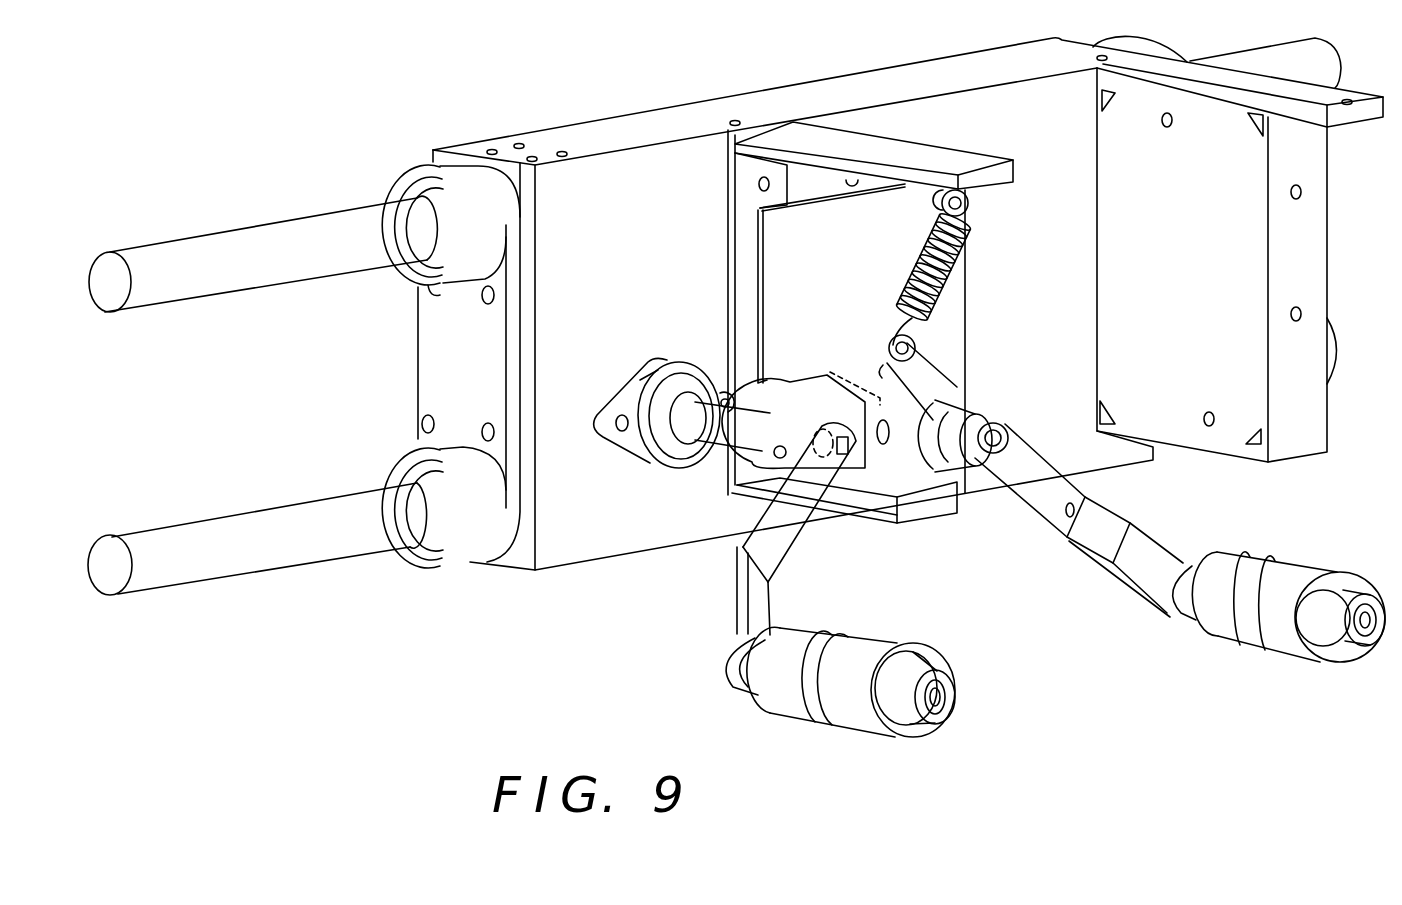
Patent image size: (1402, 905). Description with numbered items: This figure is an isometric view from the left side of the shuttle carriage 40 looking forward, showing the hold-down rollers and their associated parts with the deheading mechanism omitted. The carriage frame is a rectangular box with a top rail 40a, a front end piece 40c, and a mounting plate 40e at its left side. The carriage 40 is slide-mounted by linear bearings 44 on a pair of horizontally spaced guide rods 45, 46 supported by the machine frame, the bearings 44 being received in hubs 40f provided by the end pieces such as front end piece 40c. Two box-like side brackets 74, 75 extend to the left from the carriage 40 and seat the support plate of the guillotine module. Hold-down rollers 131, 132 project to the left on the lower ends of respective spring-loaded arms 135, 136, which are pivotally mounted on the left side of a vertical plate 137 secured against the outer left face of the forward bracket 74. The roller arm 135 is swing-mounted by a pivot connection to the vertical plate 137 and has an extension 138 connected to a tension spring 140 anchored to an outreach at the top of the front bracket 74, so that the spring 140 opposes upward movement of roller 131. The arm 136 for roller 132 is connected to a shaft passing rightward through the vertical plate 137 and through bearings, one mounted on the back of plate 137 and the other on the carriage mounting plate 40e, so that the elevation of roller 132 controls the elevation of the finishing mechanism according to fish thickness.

The shuttle carriage 40 is at (859, 321).
The top rail 40a is at (617, 104).
The front end piece 40c is at (434, 358).
The mounting plate 40e is at (615, 252).
The hub 40f is at (464, 543).
The linear bearing 44 is at (418, 543).
The guide rod 45 is at (291, 199).
The guide rod 46 is at (308, 476).
The forward side bracket 74 is at (730, 185).
The side bracket 75 is at (1317, 230).
The hold-down roller 131 is at (1225, 633).
The hold-down roller 132 is at (863, 650).
The roller arm 135 is at (1226, 481).
The roller arm 136 is at (768, 568).
The vertical plate 137 is at (730, 433).
The extension 138 is at (913, 370).
The tension spring 140 is at (937, 275).